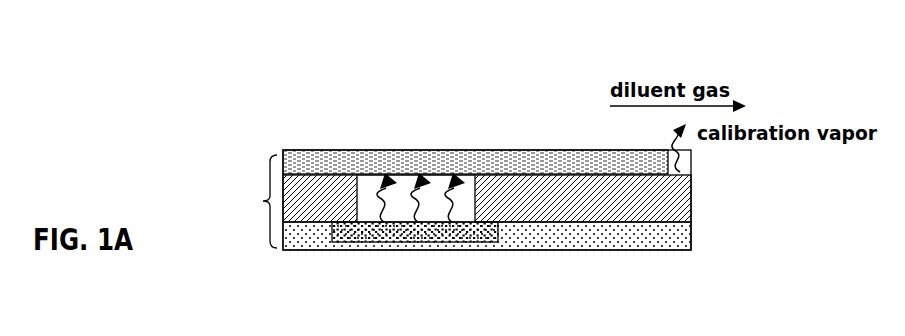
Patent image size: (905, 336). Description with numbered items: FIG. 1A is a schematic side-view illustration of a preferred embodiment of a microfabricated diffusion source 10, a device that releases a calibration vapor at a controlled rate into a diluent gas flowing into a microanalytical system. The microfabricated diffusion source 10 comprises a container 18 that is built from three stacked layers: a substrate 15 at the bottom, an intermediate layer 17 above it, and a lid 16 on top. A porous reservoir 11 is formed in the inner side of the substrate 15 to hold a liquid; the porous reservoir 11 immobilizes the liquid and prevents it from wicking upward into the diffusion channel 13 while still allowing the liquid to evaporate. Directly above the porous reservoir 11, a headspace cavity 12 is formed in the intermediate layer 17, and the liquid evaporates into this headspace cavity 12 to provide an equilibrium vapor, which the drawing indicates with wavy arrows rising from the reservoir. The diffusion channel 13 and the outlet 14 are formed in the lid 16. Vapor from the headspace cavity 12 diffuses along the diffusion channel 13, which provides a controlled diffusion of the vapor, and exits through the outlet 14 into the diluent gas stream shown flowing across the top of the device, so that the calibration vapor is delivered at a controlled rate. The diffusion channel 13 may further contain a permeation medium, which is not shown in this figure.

The microfabricated diffusion source 10 is at (407, 110).
The porous reservoir 11 is at (437, 236).
The headspace cavity 12 is at (372, 180).
The diffusion channel 13 is at (510, 175).
The outlet 14 is at (682, 166).
The substrate 15 is at (363, 250).
The lid 16 is at (315, 152).
The intermediate layer 17 is at (692, 207).
The container 18 is at (245, 201).